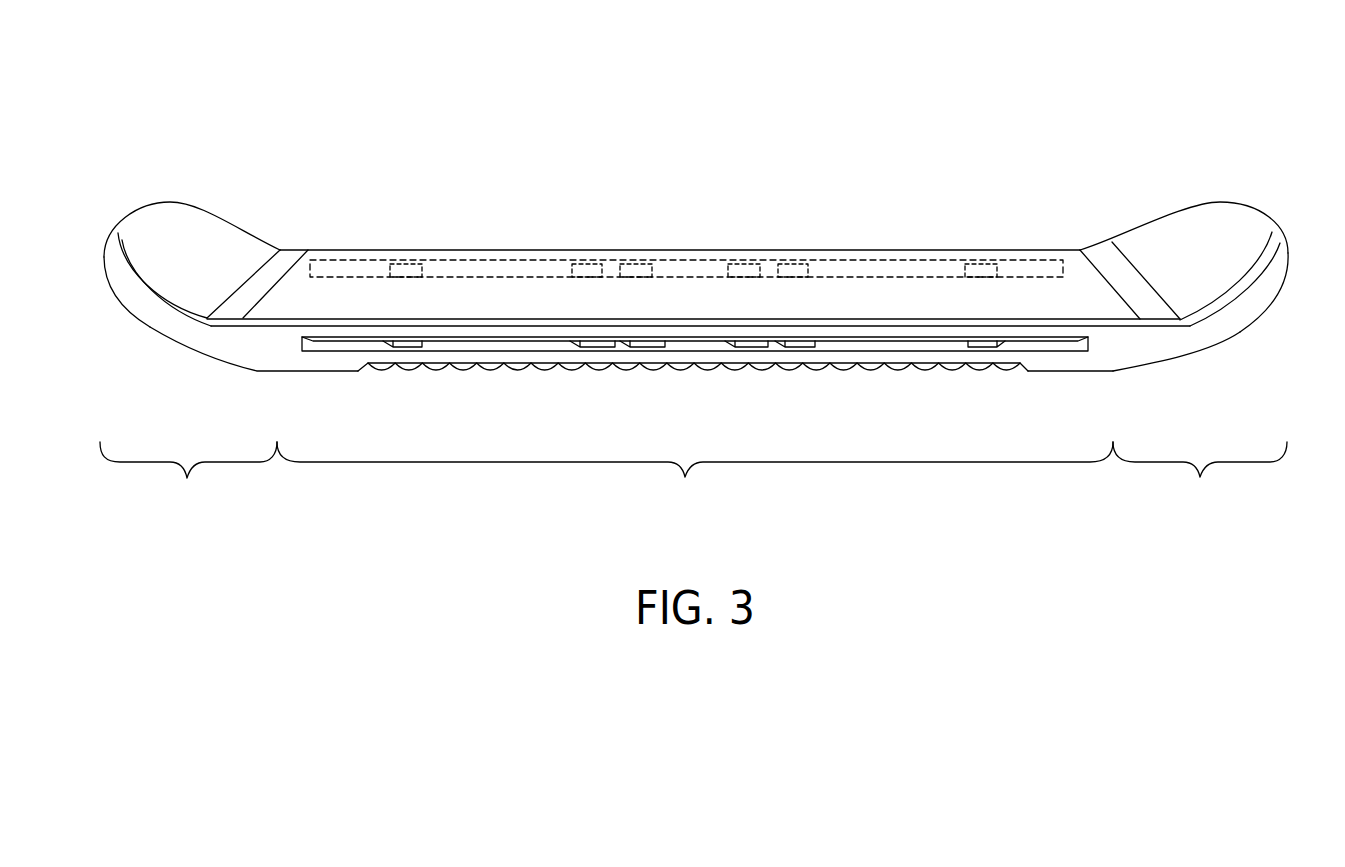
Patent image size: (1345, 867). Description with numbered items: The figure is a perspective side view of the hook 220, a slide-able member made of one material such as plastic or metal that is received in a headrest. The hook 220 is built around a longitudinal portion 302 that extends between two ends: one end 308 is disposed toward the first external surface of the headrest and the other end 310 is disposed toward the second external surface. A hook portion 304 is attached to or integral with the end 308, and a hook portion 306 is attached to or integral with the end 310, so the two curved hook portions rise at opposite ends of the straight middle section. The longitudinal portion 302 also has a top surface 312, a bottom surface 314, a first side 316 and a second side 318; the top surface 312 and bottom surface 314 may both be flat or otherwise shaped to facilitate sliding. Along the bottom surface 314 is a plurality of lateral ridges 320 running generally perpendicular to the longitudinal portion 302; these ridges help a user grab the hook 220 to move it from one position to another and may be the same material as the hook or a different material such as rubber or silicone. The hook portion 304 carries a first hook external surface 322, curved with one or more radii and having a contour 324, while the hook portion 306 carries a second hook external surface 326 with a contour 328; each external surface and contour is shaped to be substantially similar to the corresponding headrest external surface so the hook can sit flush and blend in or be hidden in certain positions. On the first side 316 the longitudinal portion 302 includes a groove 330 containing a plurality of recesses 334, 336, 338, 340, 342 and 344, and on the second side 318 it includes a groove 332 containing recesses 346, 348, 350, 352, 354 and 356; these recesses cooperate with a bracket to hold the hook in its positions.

The hook 220 is at (860, 101).
The longitudinal portion 302 is at (685, 477).
The hook portion 304 is at (1200, 477).
The hook portion 306 is at (187, 478).
The end 308 is at (1087, 307).
The end 310 is at (343, 297).
The top surface 312 is at (855, 305).
The bottom surface 314 is at (358, 371).
The first side 316 is at (272, 350).
The second side 318 is at (928, 250).
The lateral ridges 320 is at (982, 367).
The first hook external surface 322 is at (1240, 332).
The contour 324 is at (1206, 350).
The second hook external surface 326 is at (152, 327).
The contour 328 is at (166, 341).
The groove 330 is at (1045, 343).
The groove 332 is at (1025, 267).
The recess 334 is at (400, 342).
The recess 336 is at (580, 342).
The recess 338 is at (643, 341).
The recess 340 is at (740, 342).
The recess 342 is at (793, 342).
The recess 344 is at (982, 341).
The recess 346 is at (410, 268).
The recess 348 is at (582, 268).
The recess 350 is at (637, 268).
The recess 352 is at (745, 268).
The recess 354 is at (793, 268).
The recess 356 is at (980, 265).